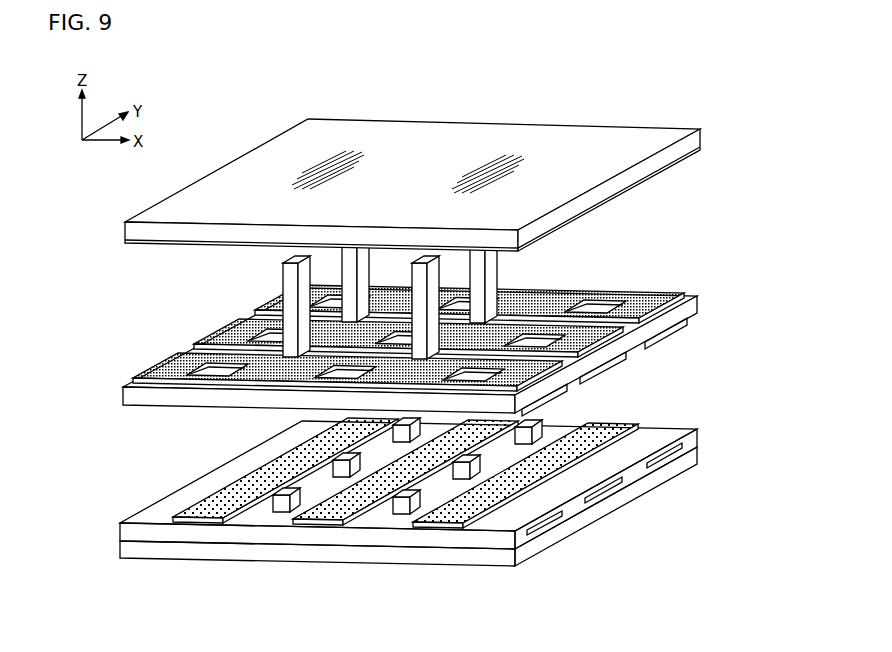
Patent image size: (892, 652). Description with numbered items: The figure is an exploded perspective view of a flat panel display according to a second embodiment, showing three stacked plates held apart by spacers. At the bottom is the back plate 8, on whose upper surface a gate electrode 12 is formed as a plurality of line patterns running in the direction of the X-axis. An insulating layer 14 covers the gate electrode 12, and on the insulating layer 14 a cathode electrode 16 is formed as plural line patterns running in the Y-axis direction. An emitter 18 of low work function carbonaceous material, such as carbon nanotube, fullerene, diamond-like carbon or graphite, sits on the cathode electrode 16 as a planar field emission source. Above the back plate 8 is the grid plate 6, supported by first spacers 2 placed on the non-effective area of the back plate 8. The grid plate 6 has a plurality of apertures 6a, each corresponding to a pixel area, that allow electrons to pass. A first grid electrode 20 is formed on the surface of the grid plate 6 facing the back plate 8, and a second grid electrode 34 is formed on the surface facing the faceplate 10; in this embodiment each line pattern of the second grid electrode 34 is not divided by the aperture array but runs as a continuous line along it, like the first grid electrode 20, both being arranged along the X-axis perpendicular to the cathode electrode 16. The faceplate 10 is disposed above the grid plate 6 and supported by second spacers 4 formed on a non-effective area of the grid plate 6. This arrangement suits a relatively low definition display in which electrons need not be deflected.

The faceplate 10 is at (603, 125).
The second spacer 4 is at (284, 277).
The grid plate 6 is at (698, 296).
The aperture 6a is at (604, 305).
The second grid electrode 34 is at (646, 300).
The first grid electrode 20 is at (676, 331).
The insulating layer 14 is at (672, 428).
The back plate 8 is at (613, 511).
The gate electrode 12 is at (534, 536).
The cathode electrode 16 is at (438, 526).
The emitter 18 is at (317, 520).
The first spacer 2 is at (280, 504).